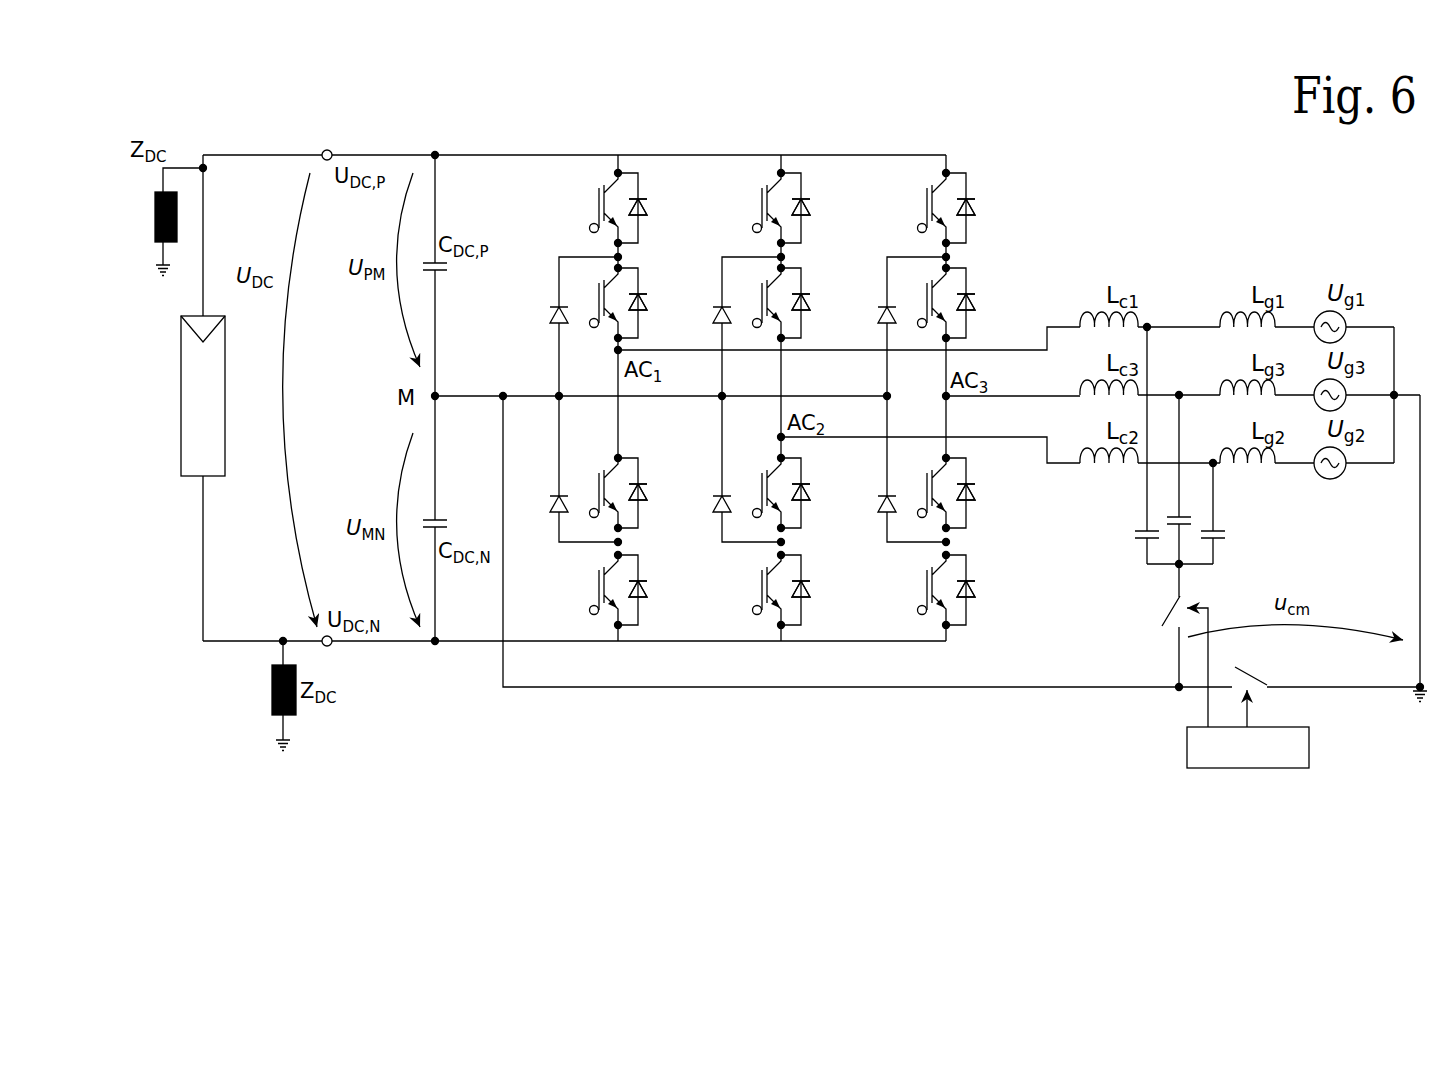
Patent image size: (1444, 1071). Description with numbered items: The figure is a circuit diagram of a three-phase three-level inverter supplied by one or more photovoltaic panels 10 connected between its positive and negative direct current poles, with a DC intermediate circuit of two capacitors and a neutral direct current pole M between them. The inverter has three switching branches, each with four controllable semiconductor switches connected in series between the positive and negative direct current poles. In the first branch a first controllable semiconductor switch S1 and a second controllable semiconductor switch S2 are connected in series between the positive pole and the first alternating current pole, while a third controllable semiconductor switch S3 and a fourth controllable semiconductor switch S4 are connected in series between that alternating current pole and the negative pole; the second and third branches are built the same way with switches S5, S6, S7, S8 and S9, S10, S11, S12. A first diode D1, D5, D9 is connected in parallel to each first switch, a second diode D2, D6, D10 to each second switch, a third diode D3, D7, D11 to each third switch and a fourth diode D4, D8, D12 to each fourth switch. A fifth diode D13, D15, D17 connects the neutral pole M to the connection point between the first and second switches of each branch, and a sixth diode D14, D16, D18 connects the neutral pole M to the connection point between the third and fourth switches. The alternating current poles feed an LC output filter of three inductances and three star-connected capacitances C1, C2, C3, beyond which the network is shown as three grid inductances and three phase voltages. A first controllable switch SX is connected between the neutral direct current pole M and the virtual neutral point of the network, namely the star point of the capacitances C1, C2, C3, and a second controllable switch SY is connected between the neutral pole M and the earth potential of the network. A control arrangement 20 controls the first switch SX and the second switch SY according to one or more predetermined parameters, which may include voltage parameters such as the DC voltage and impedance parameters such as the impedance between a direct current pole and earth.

The photovoltaic panel 10 is at (213, 479).
The control arrangement 20 is at (1309, 745).
The first controllable semiconductor switch S1 is at (610, 208).
The second controllable semiconductor switch S2 is at (610, 303).
The third controllable semiconductor switch S3 is at (610, 493).
The fourth controllable semiconductor switch S4 is at (610, 590).
The first controllable semiconductor switch S5 is at (773, 208).
The second controllable semiconductor switch S6 is at (773, 303).
The third controllable semiconductor switch S7 is at (773, 493).
The fourth controllable semiconductor switch S8 is at (773, 590).
The first controllable semiconductor switch S9 is at (938, 208).
The second controllable semiconductor switch S10 is at (934, 303).
The third controllable semiconductor switch S11 is at (934, 493).
The fourth controllable semiconductor switch S12 is at (934, 590).
The first diode D1 is at (650, 193).
The second diode D2 is at (650, 289).
The third diode D3 is at (650, 478).
The fourth diode D4 is at (650, 575).
The first diode D5 is at (813, 193).
The second diode D6 is at (813, 289).
The third diode D7 is at (813, 478).
The fourth diode D8 is at (813, 575).
The first diode D9 is at (978, 193).
The second diode D10 is at (982, 289).
The third diode D11 is at (982, 478).
The fourth diode D12 is at (982, 575).
The fifth diode D13 is at (544, 327).
The sixth diode D14 is at (544, 516).
The fifth diode D15 is at (707, 327).
The sixth diode D16 is at (707, 516).
The fifth diode D17 is at (872, 327).
The sixth diode D18 is at (872, 516).
The star-connected capacitance C1 is at (1137, 445).
The star-connected capacitance C2 is at (1220, 513).
The star-connected capacitance C3 is at (1187, 479).
The first controllable switch SX is at (1147, 625).
The second controllable switch SY is at (1327, 669).